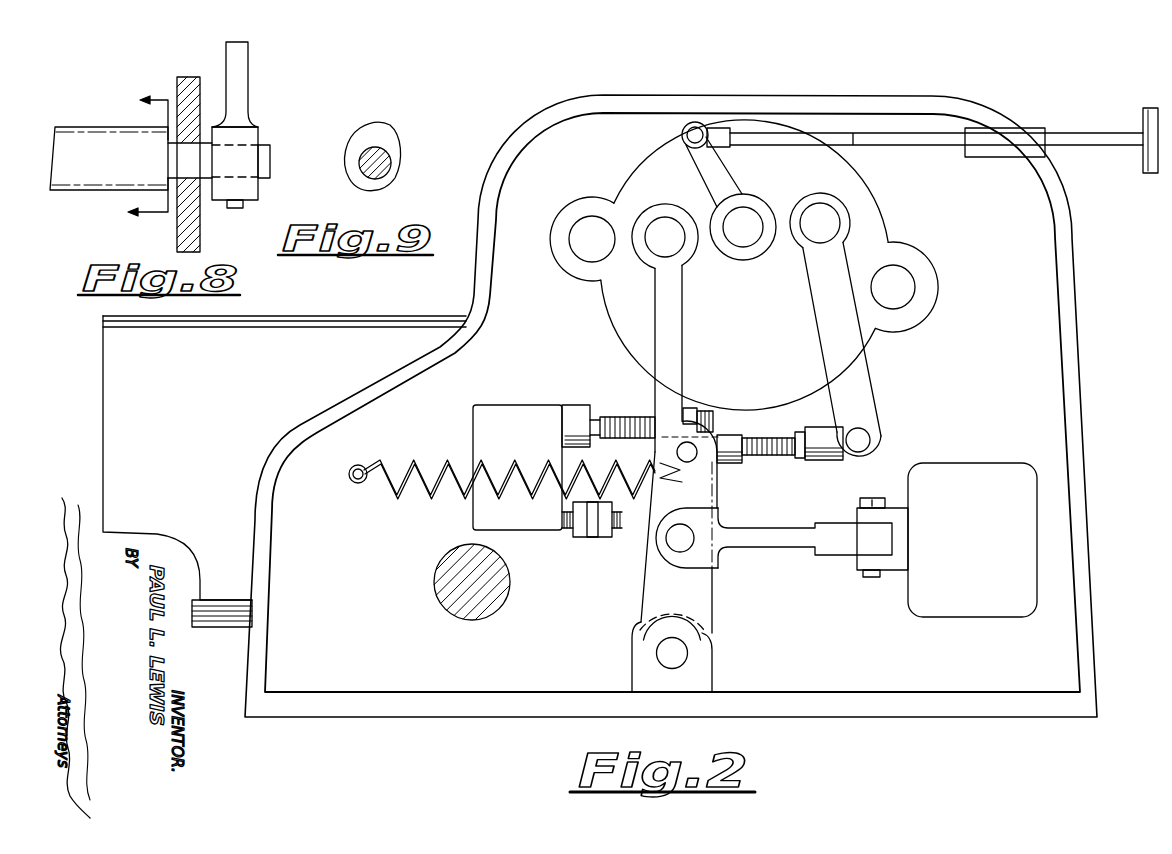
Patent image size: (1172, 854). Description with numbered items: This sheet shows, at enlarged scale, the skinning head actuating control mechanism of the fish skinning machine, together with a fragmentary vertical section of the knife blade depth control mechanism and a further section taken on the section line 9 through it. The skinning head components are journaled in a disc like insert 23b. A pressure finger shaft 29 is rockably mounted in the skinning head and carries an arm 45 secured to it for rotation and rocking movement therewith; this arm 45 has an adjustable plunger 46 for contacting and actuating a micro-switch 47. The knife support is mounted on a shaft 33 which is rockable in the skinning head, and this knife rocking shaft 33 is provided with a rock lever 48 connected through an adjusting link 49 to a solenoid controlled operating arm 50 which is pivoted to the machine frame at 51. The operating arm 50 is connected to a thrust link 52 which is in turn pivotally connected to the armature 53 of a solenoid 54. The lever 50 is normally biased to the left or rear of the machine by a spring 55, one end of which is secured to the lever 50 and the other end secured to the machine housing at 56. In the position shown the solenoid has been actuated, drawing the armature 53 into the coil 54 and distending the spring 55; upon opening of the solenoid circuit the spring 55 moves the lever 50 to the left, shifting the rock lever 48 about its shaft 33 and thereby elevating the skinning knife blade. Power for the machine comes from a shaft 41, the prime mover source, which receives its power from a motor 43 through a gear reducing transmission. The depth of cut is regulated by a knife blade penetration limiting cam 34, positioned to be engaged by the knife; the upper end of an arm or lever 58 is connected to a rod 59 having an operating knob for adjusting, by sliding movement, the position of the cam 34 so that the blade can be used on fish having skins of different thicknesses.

In FIG. 8, the section line 9 is at (137, 157).
In FIG. 8, the disc like insert 23b is at (193, 84).
In FIG. 2, the disc like insert 23b is at (845, 177).
In FIG. 2, the pressure finger shaft 29 is at (660, 250).
In FIG. 2, the shaft 33 is at (831, 221).
In FIG. 8, the knife blade penetration limiting cam 34 is at (106, 136).
In FIG. 9, the knife blade penetration limiting cam 34 is at (390, 142).
In FIG. 2, the knife blade penetration limiting cam 34 is at (744, 234).
In FIG. 2, the shaft 41 is at (495, 593).
In FIG. 2, the motor 43 is at (214, 437).
In FIG. 2, the arm 45 is at (677, 356).
In FIG. 2, the adjustable plunger 46 is at (634, 400).
In FIG. 2, the micro-switch 47 is at (532, 394).
In FIG. 2, the rock lever 48 is at (862, 386).
In FIG. 2, the adjusting link 49 is at (770, 456).
In FIG. 2, the solenoid controlled operating arm 50 is at (697, 602).
In FIG. 2, the pivot 51 is at (680, 655).
In FIG. 2, the thrust link 52 is at (803, 545).
In FIG. 2, the armature 53 is at (896, 566).
In FIG. 2, the solenoid 54 is at (988, 545).
In FIG. 2, the spring 55 is at (416, 494).
In FIG. 2, the machine housing attachment point 56 is at (349, 472).
In FIG. 2, the arm or lever 58 is at (722, 176).
In FIG. 2, the rod 59 is at (1141, 152).